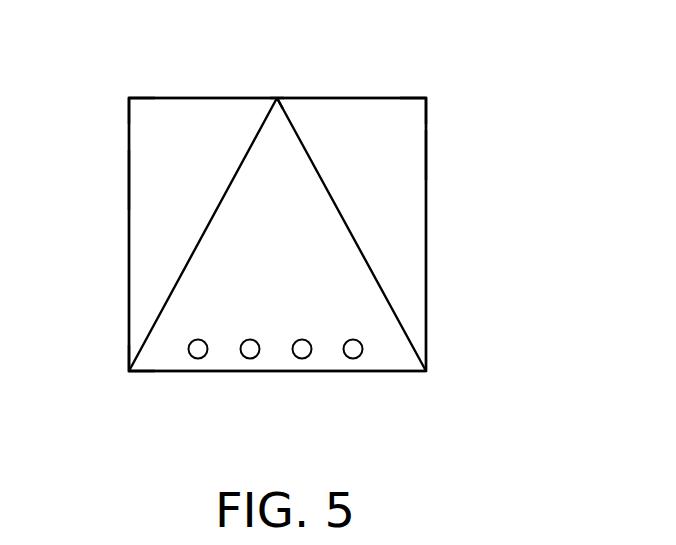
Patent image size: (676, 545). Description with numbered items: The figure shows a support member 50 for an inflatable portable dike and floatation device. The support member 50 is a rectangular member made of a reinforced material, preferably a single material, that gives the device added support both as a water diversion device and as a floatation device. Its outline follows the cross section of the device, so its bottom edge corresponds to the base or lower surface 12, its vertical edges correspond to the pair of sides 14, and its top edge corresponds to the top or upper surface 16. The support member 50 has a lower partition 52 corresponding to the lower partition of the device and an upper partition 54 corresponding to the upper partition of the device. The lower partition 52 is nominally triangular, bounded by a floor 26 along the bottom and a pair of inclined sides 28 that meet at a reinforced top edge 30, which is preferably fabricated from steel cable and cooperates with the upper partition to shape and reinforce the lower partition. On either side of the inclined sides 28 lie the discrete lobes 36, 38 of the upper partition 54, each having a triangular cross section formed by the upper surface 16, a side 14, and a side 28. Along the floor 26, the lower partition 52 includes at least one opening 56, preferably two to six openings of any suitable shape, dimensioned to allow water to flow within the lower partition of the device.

The base or lower surface 12 is at (152, 372).
The sides 14 is at (129, 317).
The top or upper surface 16 is at (220, 98).
The floor 26 is at (252, 372).
The sides of the lower partition 28 is at (177, 280).
The reinforced top edge 30 is at (277, 98).
The lobe 36 is at (397, 117).
The lobe 38 is at (157, 140).
The support member 50 is at (512, 87).
The lower partition of the support member 52 is at (282, 130).
The upper partition of the support member 54 is at (157, 201).
The opening 56 is at (324, 352).